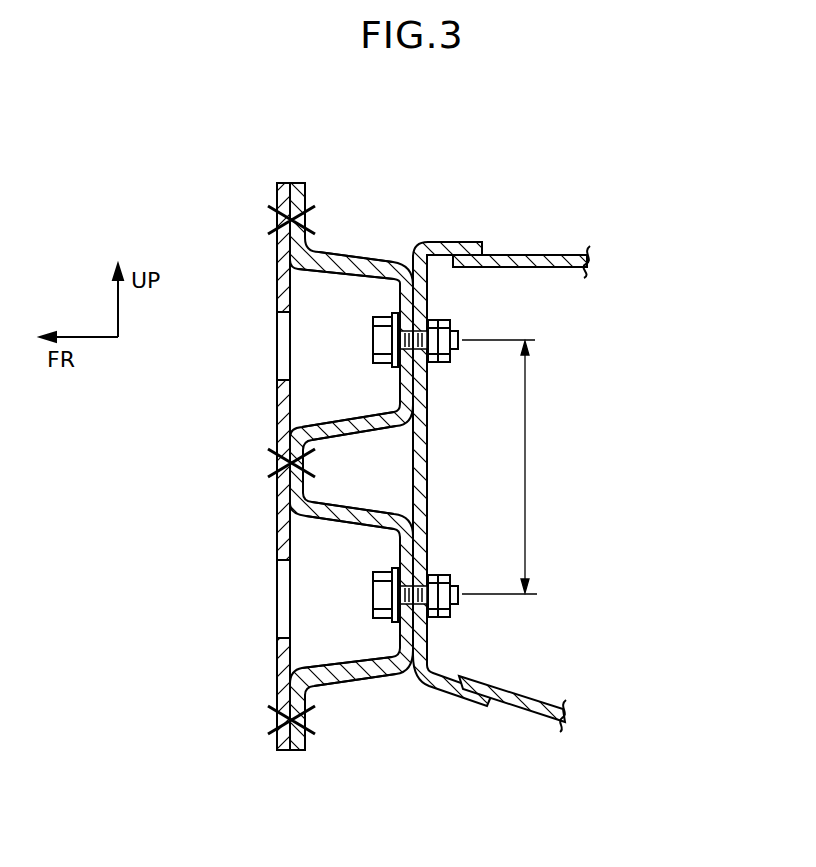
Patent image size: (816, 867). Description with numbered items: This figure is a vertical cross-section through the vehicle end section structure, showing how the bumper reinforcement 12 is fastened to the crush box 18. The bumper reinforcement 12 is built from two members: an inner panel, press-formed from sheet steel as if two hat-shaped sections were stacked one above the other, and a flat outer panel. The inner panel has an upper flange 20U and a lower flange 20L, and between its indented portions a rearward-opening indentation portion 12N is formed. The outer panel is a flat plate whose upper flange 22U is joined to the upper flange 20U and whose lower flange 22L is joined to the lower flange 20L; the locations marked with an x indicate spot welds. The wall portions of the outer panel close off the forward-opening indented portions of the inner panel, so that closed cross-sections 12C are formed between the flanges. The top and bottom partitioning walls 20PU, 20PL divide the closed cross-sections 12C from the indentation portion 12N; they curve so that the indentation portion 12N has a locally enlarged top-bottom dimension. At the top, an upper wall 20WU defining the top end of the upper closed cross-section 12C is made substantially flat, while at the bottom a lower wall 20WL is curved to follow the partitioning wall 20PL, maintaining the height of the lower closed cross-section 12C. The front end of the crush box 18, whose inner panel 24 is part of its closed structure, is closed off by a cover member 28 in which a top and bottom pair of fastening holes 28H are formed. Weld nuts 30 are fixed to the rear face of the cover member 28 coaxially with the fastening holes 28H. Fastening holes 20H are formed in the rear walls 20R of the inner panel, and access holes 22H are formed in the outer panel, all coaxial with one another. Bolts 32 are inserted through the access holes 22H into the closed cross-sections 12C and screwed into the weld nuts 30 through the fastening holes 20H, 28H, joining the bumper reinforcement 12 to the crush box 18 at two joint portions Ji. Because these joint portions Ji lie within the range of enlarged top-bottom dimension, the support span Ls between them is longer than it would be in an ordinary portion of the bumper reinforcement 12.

The bumper reinforcement 12 is at (264, 483).
The closed cross-section 12C is at (314, 320).
The indentation portion 12N is at (386, 465).
The crush box 18 is at (553, 455).
The inner panel 24 is at (557, 251).
The upper flange 20U is at (310, 186).
The upper wall 20WU is at (376, 252).
The rear wall 20R is at (398, 297).
The fastening hole 20H is at (430, 322).
The upper partitioning wall 20PU is at (353, 410).
The lower partitioning wall 20PL is at (341, 503).
The lower wall 20WL is at (360, 690).
The lower flange 20L is at (308, 752).
The upper flange 22U is at (281, 185).
The access hole 22H is at (278, 312).
The lower flange 22L is at (283, 752).
The cover member 28 is at (460, 239).
The fastening hole 28H is at (436, 362).
The weld nut 30 is at (452, 354).
The bolt 32 is at (372, 340).
The joint portion Ji is at (472, 326).
The support span Ls is at (499, 467).